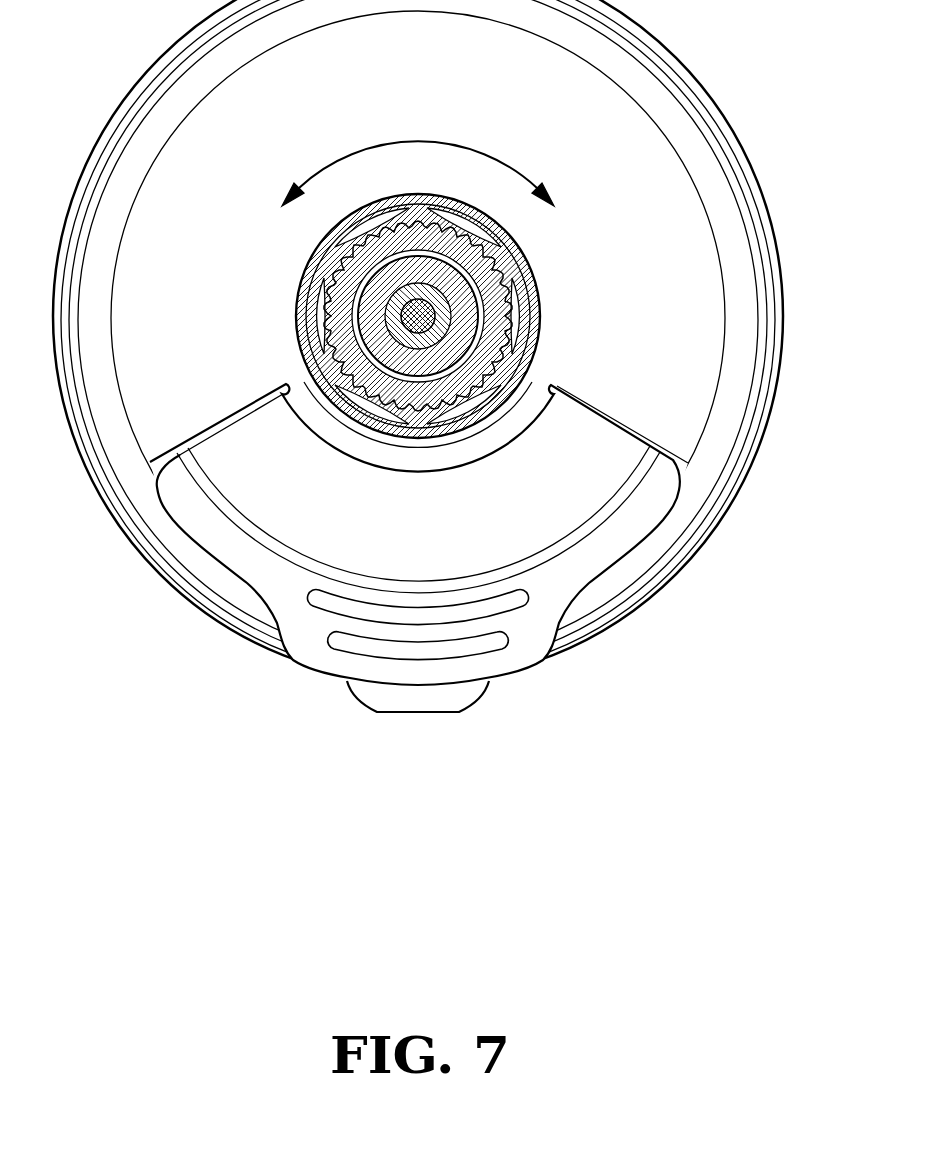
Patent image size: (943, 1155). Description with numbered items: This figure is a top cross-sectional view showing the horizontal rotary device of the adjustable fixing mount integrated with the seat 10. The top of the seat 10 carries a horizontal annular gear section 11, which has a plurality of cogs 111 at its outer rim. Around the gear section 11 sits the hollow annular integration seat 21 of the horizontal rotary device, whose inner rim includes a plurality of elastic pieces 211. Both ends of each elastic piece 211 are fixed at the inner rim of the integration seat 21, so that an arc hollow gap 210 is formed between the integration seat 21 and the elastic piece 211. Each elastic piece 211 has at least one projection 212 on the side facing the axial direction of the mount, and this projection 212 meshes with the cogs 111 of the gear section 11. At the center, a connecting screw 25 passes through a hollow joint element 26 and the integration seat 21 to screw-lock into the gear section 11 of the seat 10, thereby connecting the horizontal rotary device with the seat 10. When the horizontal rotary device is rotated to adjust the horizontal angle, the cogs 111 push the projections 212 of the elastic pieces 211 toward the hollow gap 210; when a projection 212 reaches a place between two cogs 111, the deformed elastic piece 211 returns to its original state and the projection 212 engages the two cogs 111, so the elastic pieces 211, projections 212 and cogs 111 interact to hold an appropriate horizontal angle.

The seat 10 is at (640, 137).
The gear section 11 is at (480, 259).
The cogs 111 is at (510, 280).
The integration seat 21 is at (330, 380).
The hollow gap 210 is at (315, 328).
The elastic piece 211 is at (300, 347).
The projection 212 is at (317, 311).
The connecting screw 25 is at (403, 305).
The hollow joint element 26 is at (363, 298).